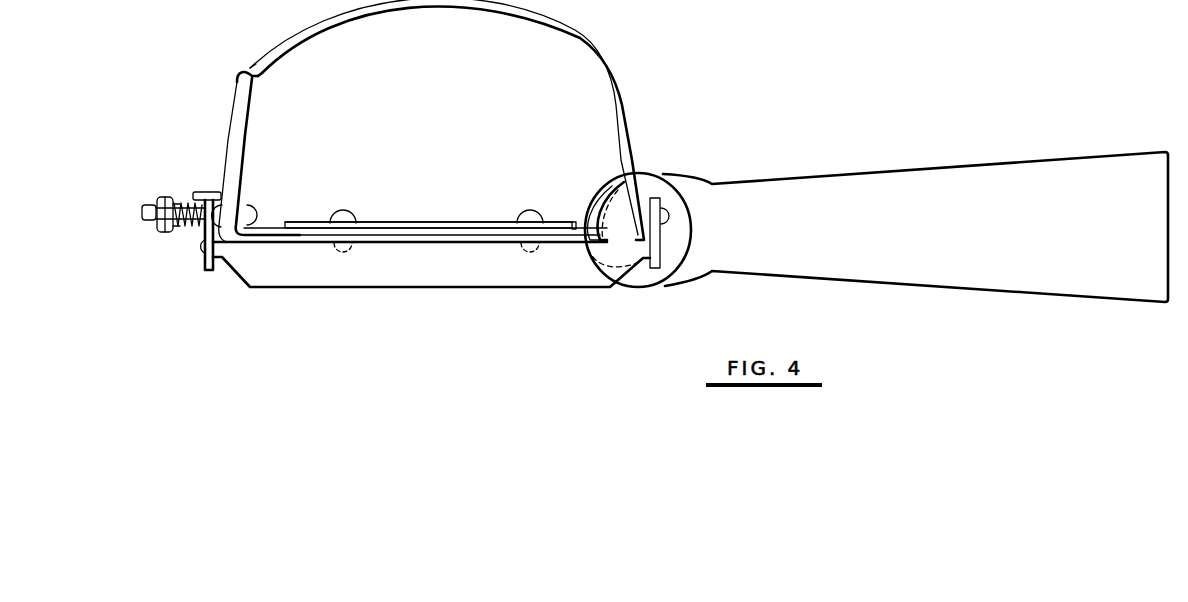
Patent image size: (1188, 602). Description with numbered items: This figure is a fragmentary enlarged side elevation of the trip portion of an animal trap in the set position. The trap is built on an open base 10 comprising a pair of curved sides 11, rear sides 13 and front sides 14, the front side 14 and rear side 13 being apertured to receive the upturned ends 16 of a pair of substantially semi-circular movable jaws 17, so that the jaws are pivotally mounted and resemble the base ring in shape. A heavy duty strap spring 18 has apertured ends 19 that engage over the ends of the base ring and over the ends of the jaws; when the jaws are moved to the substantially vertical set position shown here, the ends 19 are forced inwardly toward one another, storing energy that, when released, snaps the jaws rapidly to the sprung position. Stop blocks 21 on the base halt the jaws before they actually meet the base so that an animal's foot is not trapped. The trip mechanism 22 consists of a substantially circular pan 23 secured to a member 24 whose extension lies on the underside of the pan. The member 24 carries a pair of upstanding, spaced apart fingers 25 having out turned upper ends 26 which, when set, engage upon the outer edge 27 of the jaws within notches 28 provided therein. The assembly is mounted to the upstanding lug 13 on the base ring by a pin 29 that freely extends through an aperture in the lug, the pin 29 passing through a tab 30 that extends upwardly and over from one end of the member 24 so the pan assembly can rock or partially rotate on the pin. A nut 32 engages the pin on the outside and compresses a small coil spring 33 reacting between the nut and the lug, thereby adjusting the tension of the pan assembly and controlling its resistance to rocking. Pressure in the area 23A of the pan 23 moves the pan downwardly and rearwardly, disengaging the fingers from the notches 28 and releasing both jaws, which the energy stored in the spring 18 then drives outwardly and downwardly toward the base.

The open base 10 is at (667, 111).
The curved sides 11 is at (548, 285).
The rear sides 13 is at (208, 264).
The front sides 14 is at (661, 236).
The upturned ends 16 is at (200, 203).
The movable jaws 17 is at (480, 12).
The strap spring 18 is at (925, 175).
The apertured ends 19 is at (592, 210).
The stop blocks 21 is at (608, 193).
The trip mechanism 22 is at (405, 197).
The pan 23 is at (402, 234).
The pan area 23A is at (424, 222).
The member 24 is at (510, 236).
The fingers 25 is at (249, 138).
The out turned upper ends 26 is at (236, 77).
The outer edge 27 is at (256, 63).
The notches 28 is at (262, 74).
The pin 29 is at (262, 213).
The tab 30 is at (214, 192).
The nut 32 is at (156, 203).
The coil spring 33 is at (182, 230).